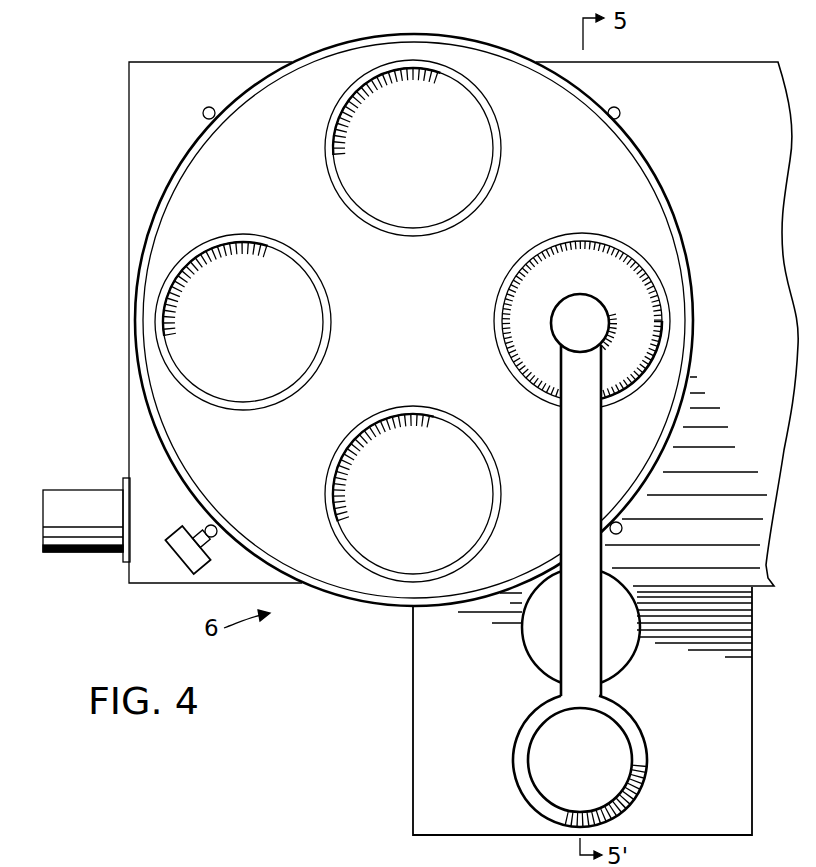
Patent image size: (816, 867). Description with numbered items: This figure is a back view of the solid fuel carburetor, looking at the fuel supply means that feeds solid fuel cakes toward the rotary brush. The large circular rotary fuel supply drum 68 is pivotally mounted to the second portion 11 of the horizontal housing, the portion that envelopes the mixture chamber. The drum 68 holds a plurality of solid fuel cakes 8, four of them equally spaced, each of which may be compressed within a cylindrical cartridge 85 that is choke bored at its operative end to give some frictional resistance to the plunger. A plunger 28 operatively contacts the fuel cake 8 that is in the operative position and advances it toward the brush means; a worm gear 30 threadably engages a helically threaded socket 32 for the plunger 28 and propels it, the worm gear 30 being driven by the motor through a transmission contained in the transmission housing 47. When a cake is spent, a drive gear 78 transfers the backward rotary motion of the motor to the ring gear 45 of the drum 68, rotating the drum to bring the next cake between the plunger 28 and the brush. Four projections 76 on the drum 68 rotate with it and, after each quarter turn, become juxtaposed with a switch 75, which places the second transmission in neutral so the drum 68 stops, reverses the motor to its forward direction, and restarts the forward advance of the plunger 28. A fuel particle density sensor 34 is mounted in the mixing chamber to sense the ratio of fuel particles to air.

The solid fuel cake 8 is at (362, 113).
The cylindrical cartridge 85 is at (450, 74).
The rotary fuel supply drum 68 is at (227, 145).
The ring gear 45 is at (162, 205).
The second portion of the horizontal housing 11 is at (738, 137).
The projections 76 is at (206, 108).
The switch 75 is at (182, 525).
The fuel particle density sensor 34 is at (78, 492).
The plunger 28 is at (644, 312).
The drive gear 78 is at (613, 585).
The helically threaded socket 32 is at (622, 715).
The worm gear 30 is at (607, 778).
The transmission housing 47 is at (422, 738).